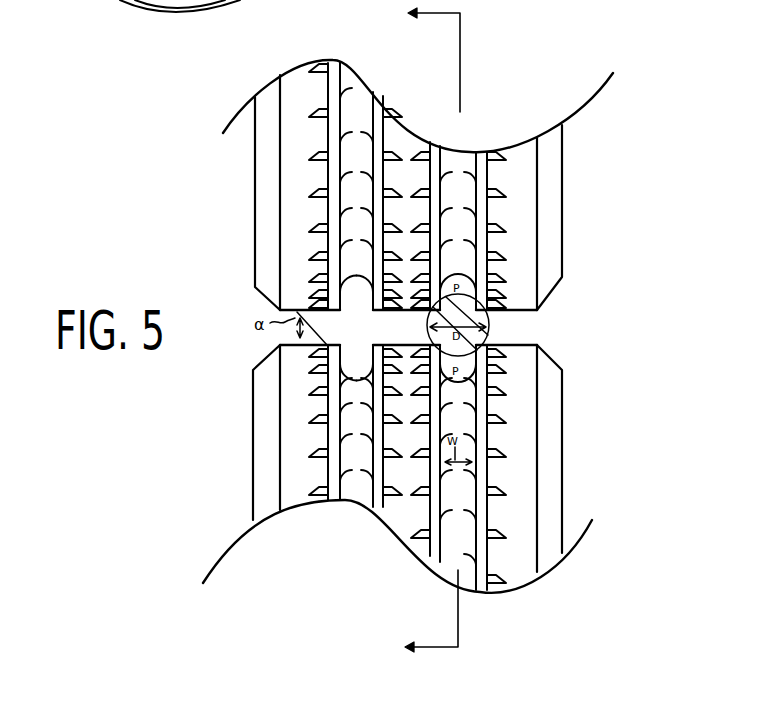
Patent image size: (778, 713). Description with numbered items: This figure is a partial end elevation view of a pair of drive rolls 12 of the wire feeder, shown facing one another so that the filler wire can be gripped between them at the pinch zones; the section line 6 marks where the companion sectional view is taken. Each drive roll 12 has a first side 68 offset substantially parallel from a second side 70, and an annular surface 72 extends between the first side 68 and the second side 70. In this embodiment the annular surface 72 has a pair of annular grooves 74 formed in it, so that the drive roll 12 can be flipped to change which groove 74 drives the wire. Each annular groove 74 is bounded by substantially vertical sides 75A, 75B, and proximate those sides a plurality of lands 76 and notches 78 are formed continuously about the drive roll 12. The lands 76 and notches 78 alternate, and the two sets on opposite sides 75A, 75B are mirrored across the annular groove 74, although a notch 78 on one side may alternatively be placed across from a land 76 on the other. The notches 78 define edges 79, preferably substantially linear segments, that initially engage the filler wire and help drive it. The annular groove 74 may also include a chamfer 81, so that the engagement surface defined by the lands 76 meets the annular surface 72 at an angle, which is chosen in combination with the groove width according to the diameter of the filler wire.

The section line 6- 6 is at (419, 334).
The drive roll 12 is at (252, 177).
The first side 68 is at (564, 217).
The second side 70 is at (253, 152).
The annular surface 72 is at (520, 345).
The annular groove 74 is at (347, 77).
The substantially vertical side 75A is at (341, 328).
The substantially vertical side 75B is at (374, 328).
The land 76 is at (483, 213).
The notch 78 is at (497, 231).
The edge 79 is at (322, 152).
The chamfer 81 is at (327, 397).